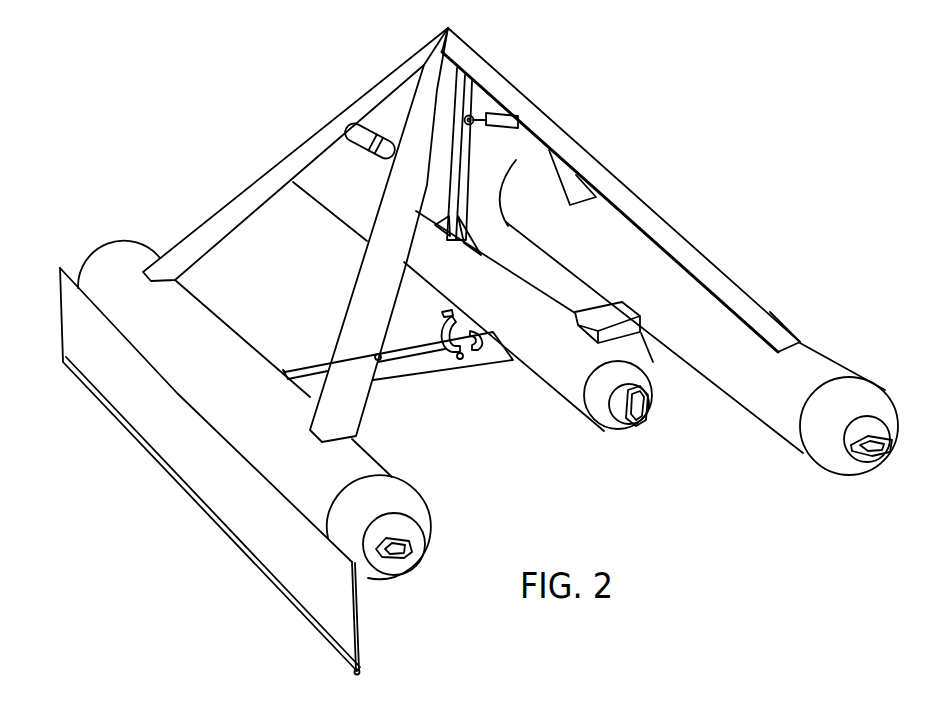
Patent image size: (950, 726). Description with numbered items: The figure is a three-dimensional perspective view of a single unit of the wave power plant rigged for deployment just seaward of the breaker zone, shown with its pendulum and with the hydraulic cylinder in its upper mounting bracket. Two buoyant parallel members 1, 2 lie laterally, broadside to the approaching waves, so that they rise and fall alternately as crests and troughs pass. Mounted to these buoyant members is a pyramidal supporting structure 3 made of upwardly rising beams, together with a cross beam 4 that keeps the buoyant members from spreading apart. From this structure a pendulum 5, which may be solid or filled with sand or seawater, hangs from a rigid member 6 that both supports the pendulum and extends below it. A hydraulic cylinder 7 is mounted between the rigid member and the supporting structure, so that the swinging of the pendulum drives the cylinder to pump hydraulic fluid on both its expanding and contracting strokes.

The buoyant parallel member 1 is at (120, 245).
The buoyant parallel member 2 is at (843, 365).
The pyramidal supporting structure 3 is at (270, 172).
The cross beam 4 is at (387, 382).
The pendulum 5 is at (620, 430).
The rigid member 6 is at (468, 177).
The hydraulic cylinder 7 is at (489, 130).